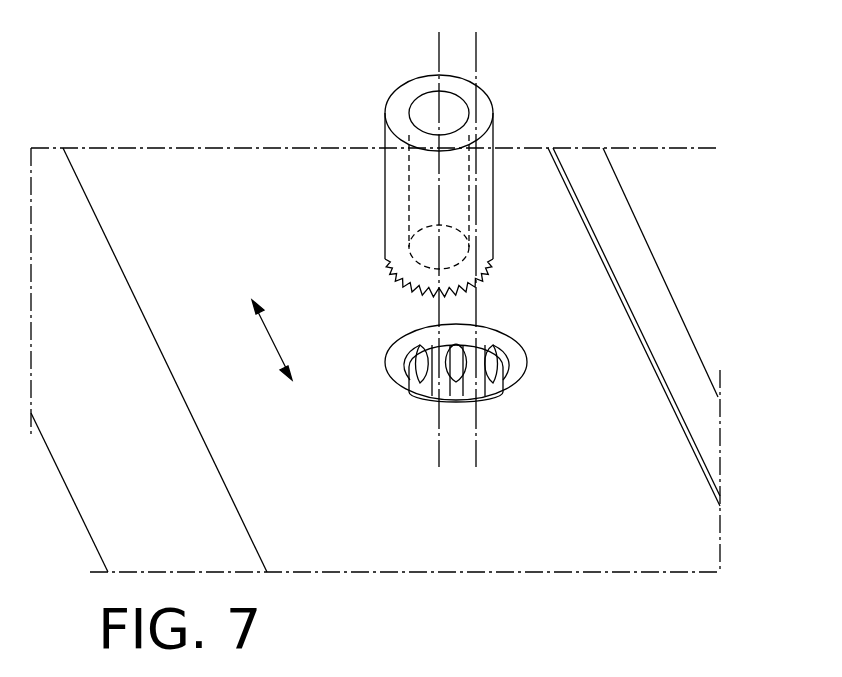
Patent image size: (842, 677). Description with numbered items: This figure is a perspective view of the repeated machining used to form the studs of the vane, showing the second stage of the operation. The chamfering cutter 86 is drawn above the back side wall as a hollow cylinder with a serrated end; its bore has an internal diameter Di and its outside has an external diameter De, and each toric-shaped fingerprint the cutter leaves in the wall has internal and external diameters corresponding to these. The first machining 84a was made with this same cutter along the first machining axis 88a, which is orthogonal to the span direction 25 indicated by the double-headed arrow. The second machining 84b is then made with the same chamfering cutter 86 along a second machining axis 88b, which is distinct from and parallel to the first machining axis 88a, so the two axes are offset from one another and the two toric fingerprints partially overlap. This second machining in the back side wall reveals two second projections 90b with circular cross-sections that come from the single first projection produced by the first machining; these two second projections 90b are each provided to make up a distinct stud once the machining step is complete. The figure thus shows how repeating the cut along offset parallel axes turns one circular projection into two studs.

The span direction 25 is at (278, 340).
The first machining 84a is at (527, 350).
The second machining 84b is at (388, 345).
The chamfering cutter 86 is at (493, 210).
The first machining axis 88a is at (477, 50).
The second machining axis 88b is at (438, 45).
The second projections 90b is at (500, 375).
The external diameter De is at (395, 243).
The internal diameter Di is at (410, 238).